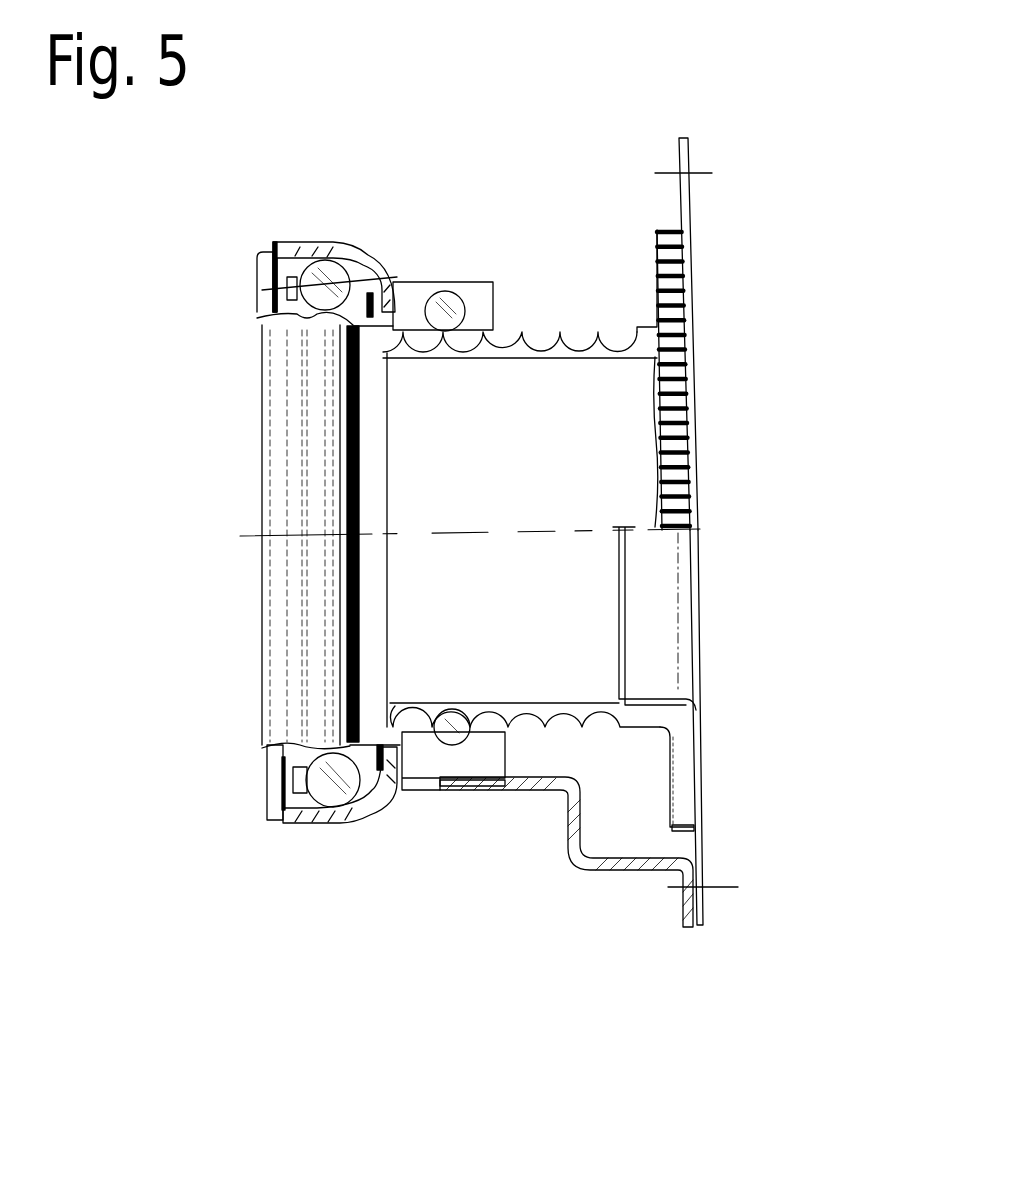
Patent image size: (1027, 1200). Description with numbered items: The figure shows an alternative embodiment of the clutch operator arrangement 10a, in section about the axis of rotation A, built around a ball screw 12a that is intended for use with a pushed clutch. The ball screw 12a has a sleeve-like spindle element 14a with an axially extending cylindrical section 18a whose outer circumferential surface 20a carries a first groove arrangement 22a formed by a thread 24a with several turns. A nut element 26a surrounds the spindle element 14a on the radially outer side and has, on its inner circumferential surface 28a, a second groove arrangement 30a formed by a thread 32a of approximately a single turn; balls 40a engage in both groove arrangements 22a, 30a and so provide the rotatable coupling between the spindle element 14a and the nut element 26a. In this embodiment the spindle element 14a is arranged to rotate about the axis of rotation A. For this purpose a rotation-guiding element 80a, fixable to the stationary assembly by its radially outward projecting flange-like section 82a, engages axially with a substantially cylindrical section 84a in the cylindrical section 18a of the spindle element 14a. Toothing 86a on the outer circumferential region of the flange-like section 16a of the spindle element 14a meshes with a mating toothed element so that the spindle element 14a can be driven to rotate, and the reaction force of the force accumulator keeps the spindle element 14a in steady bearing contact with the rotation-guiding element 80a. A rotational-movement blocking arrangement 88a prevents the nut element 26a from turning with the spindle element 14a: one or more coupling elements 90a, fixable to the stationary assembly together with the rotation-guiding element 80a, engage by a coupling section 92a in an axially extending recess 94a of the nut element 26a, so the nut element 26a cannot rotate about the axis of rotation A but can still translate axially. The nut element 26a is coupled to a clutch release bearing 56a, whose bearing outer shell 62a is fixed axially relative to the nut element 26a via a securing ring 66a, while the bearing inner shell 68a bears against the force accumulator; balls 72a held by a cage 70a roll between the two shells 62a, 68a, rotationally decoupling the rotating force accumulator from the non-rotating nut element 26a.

The clutch operator arrangement 10a is at (580, 92).
The ball screw 12a is at (442, 147).
The spindle element 14a is at (700, 710).
The flange-like section 16a is at (672, 805).
The cylindrical section 18a is at (533, 728).
The outer circumferential surface 20a is at (683, 243).
The first groove arrangement 22a is at (580, 340).
The thread 24a is at (538, 345).
The nut element 26a is at (422, 283).
The inner circumferential surface 28a is at (393, 340).
The second groove arrangement 30a is at (446, 290).
The thread 32a is at (448, 735).
The balls 40a is at (290, 805).
The clutch release bearing 56a is at (262, 420).
The bearing outer shell 62a is at (345, 822).
The securing ring 66a is at (380, 283).
The bearing inner shell 68a is at (270, 770).
The cage 70a is at (262, 290).
The balls 72a is at (290, 243).
The rotation-guiding element 80a is at (703, 768).
The flange-like section 82a is at (703, 857).
The cylindrical section 84a is at (672, 695).
The toothing 86a is at (673, 330).
The rotational-movement blocking arrangement 88a is at (603, 933).
The coupling element 90a is at (567, 843).
The coupling section 92a is at (500, 775).
The recess 94a is at (440, 790).
The axis of rotation A is at (253, 536).